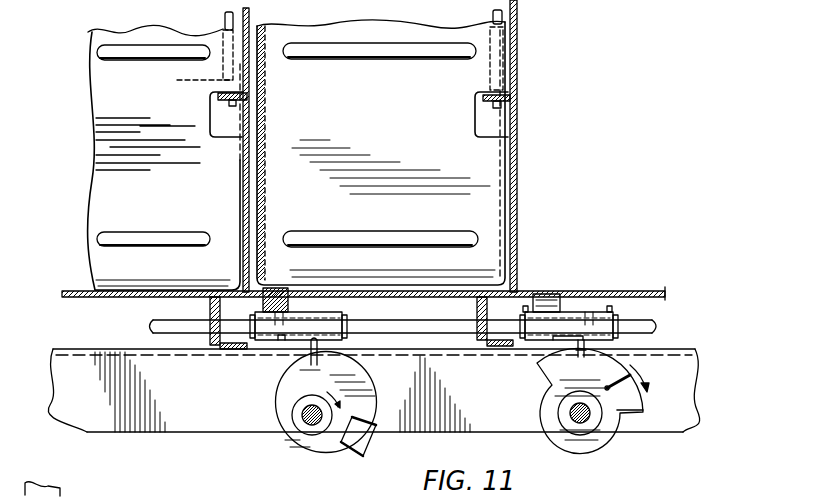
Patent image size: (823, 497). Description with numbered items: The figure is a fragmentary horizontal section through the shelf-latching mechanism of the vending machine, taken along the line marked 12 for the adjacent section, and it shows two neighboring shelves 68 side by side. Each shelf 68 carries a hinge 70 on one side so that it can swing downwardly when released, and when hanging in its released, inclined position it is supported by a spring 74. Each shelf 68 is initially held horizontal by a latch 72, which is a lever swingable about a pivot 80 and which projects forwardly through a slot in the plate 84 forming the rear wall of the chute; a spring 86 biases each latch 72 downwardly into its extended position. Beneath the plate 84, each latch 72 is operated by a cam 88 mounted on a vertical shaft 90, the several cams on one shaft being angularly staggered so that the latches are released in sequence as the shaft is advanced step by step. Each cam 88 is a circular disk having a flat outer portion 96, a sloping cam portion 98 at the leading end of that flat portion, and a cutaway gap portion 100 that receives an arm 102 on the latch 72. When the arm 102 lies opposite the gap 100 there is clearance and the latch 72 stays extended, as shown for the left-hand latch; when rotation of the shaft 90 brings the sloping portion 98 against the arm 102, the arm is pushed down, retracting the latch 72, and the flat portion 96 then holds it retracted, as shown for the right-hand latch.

The section line 12- 12 is at (217, 207).
The shelf 68 is at (92, 176).
The hinge 70 is at (233, 113).
The latch 72 is at (280, 279).
The spring 74 is at (188, 84).
The pivot 80 is at (431, 320).
The plate 84 is at (620, 292).
The spring 86 is at (250, 352).
The cam 88 is at (380, 441).
The vertical shaft 90 is at (310, 428).
The flat outer portion 96 is at (363, 395).
The sloping cam portion 98 is at (357, 443).
The gap portion 100 is at (278, 383).
The arm 102 is at (311, 372).